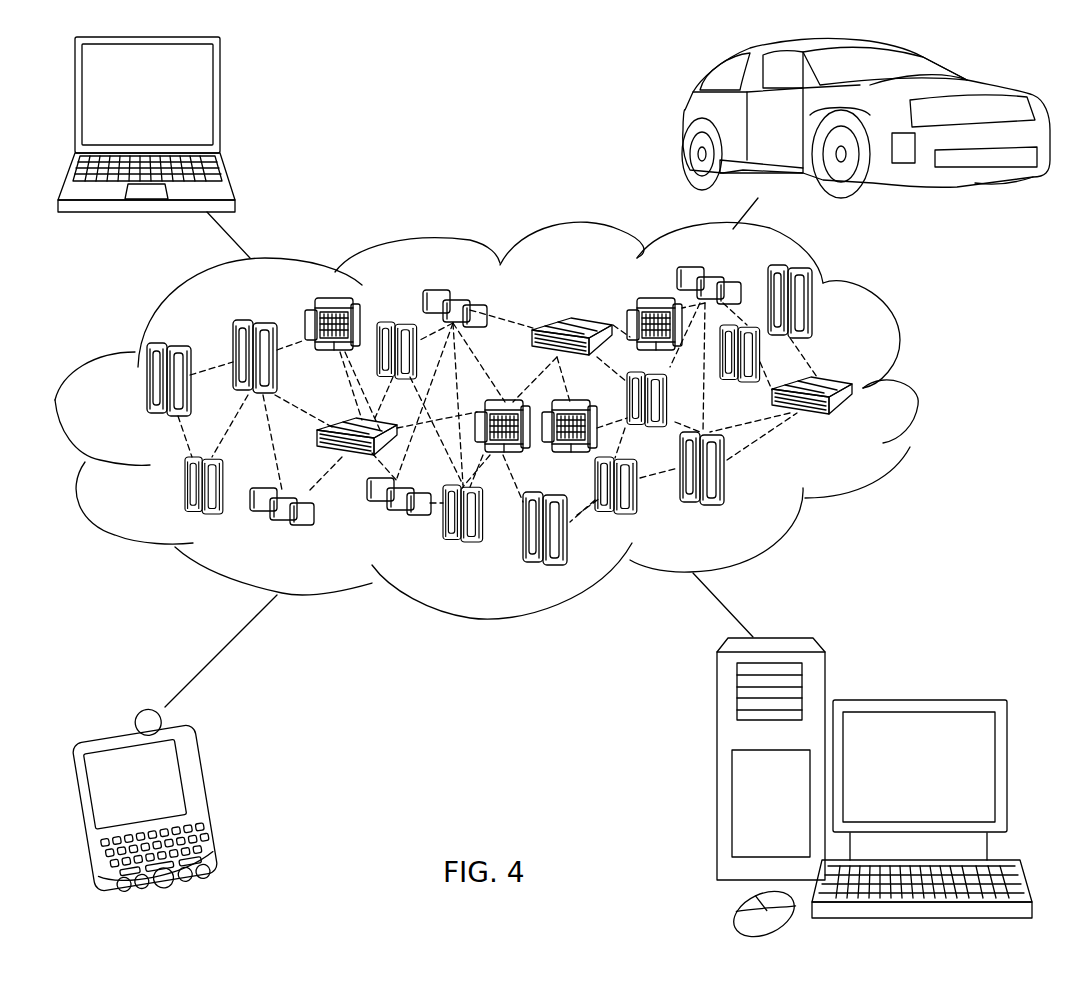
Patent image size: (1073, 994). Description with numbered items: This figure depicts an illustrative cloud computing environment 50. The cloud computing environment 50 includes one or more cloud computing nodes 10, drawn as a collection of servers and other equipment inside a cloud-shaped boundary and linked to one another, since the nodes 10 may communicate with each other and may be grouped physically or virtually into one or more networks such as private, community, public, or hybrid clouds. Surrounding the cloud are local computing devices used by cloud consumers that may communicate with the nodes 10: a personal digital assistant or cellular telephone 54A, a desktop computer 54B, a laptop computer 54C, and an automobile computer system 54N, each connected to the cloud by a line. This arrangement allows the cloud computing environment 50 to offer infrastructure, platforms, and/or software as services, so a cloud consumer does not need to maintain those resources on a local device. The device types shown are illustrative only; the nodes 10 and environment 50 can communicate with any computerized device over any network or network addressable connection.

The cloud computing node 10 is at (862, 426).
The cloud computing environment 50 is at (917, 391).
The personal digital assistant or cellular telephone 54A is at (210, 800).
The desktop computer 54B is at (917, 698).
The laptop computer 54C is at (222, 104).
The automobile computer system 54N is at (686, 120).